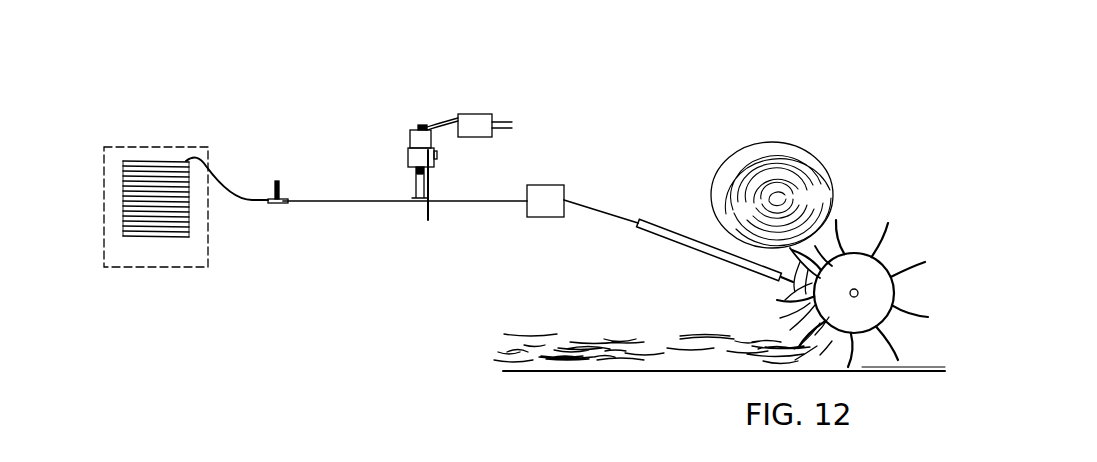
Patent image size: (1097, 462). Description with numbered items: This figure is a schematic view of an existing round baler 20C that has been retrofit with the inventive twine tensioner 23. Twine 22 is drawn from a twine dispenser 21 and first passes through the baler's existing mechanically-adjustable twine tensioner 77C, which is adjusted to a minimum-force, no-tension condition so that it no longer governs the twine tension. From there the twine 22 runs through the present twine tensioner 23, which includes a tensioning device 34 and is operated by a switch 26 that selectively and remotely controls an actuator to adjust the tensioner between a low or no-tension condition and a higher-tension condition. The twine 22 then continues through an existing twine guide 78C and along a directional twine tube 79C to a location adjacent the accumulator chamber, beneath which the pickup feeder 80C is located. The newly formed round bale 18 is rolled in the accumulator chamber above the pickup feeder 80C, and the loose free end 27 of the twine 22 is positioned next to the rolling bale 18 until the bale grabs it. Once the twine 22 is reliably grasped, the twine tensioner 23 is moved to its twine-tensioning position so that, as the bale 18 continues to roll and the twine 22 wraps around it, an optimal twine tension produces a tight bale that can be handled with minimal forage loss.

The twine dispenser 21 is at (175, 146).
The twine 22 is at (258, 199).
The existing mechanically-adjustable twine tensioner 77C is at (280, 183).
The twine tensioner 23 is at (434, 107).
The wire clamp/feed device 34 is at (410, 150).
The switch 26 is at (484, 118).
The existing twine guide 78C is at (545, 185).
The directional twine tube 79C is at (660, 238).
The free end 27 is at (782, 284).
The round bale 18 is at (790, 155).
The existing baler 20C is at (878, 252).
The pickup feeder 80C is at (884, 312).